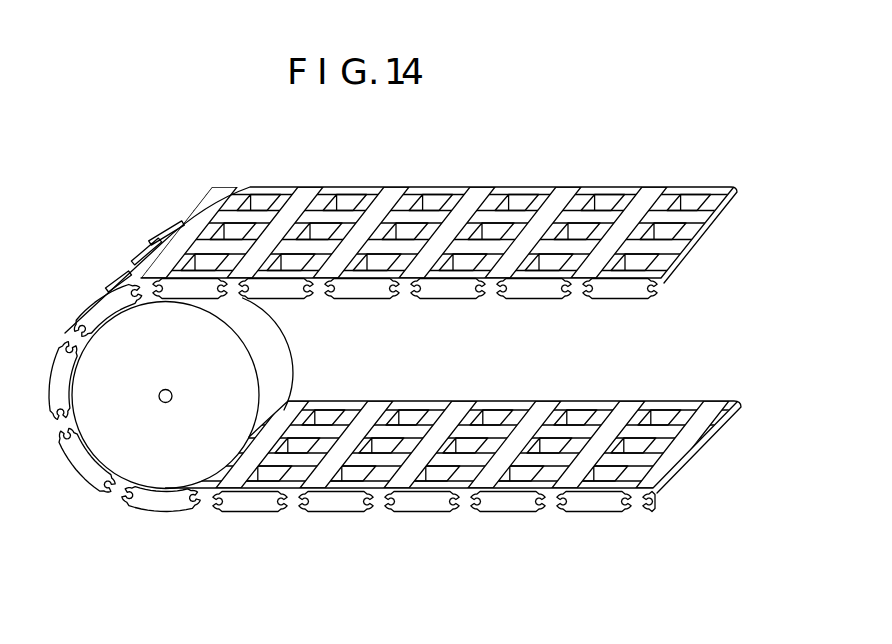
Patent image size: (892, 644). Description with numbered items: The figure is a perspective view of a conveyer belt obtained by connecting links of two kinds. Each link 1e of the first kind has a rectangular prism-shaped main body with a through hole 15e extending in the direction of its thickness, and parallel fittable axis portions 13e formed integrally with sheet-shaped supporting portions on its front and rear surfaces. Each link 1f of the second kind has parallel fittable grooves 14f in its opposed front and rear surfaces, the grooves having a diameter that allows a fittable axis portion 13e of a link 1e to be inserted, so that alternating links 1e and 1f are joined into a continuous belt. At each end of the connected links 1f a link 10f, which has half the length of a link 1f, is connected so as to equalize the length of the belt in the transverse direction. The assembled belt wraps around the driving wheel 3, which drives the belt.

The driving wheel 3 is at (172, 465).
The link of a first kind 1e is at (408, 489).
The link of a second kind 1f is at (445, 432).
The half-length link 10f is at (297, 485).
The fittable axis portion 13e is at (388, 510).
The fittable groove 14f is at (377, 512).
The through hole 15e is at (497, 416).